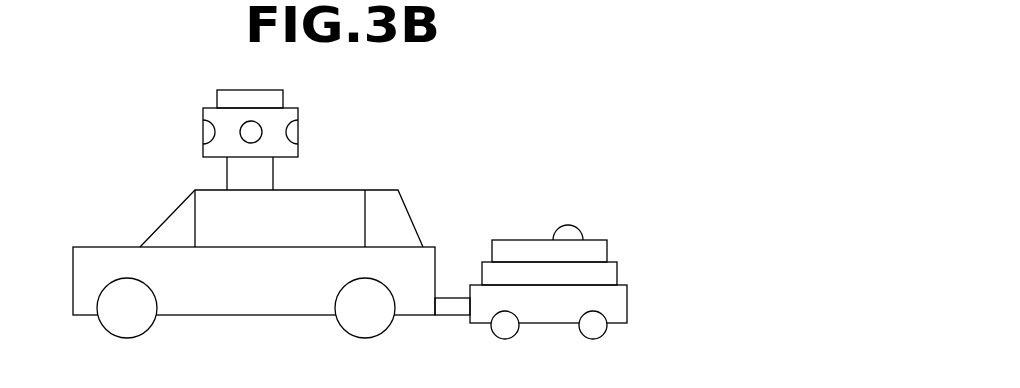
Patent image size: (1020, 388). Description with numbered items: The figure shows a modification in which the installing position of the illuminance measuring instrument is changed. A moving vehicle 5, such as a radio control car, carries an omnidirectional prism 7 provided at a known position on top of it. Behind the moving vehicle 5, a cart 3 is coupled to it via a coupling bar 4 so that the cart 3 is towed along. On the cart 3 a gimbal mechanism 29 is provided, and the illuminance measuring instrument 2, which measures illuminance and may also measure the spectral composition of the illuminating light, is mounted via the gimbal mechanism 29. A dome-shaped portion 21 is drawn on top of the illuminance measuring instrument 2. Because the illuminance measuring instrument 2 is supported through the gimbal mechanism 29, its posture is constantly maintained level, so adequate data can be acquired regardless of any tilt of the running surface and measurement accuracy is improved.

The illuminance measuring instrument 2 is at (523, 240).
The cart 3 is at (627, 295).
The coupling bar 4 is at (452, 297).
The moving vehicle 5 is at (92, 247).
The omnidirectional prism 7 is at (202, 112).
The sensor dome 21 is at (565, 225).
The gimbal mechanism 29 is at (617, 267).